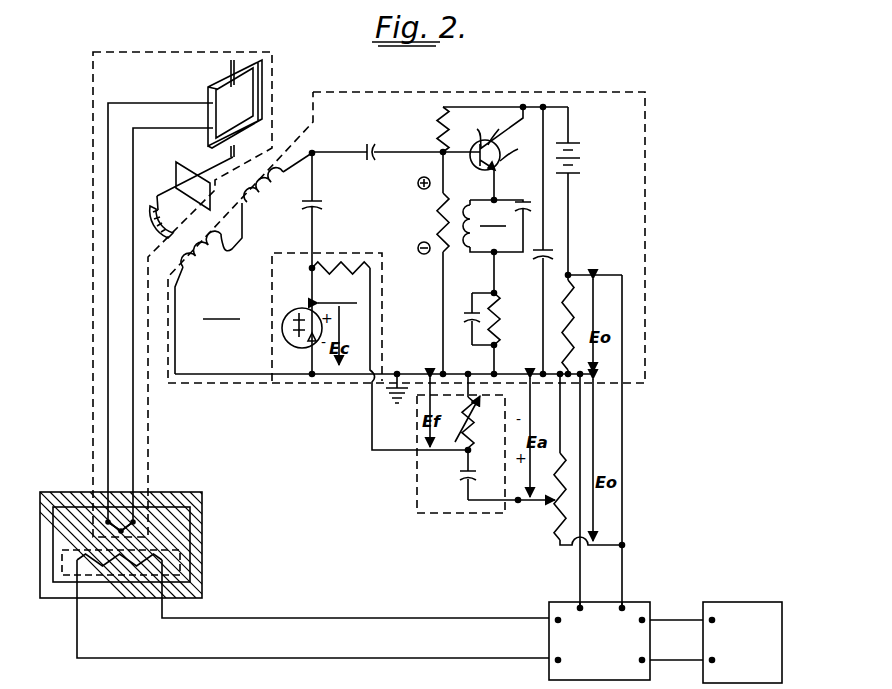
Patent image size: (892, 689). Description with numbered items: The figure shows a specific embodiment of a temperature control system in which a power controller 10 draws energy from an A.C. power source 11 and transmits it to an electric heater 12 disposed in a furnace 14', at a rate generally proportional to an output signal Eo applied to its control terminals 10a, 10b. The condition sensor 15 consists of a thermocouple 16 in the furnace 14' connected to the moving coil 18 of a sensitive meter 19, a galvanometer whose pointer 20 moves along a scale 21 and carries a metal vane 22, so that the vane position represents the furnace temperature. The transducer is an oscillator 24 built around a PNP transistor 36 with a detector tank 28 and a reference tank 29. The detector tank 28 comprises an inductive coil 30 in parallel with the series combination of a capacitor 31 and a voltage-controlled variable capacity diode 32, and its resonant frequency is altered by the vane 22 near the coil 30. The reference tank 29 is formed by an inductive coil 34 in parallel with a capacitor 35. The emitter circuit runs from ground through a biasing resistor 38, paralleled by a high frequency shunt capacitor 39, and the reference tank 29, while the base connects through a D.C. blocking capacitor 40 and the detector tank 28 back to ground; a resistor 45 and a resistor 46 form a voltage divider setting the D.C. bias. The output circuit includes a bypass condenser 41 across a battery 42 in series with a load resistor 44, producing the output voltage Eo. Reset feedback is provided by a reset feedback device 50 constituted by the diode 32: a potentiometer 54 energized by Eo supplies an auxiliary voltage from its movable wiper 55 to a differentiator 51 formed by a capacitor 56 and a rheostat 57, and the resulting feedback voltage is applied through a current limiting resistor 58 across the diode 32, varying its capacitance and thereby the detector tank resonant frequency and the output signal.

The condition sensor 15 is at (224, 24).
The moving coil 18 is at (214, 90).
The sensitive meter 19 is at (195, 95).
The pointer 20 is at (158, 207).
The scale 21 is at (162, 226).
The metal vane 22 is at (195, 162).
The oscillator 24 is at (432, 68).
The detector tank circuit 28 is at (208, 288).
The reference tank circuit 29 is at (496, 226).
The inductive coil 30 is at (242, 246).
The capacitor 31 is at (346, 194).
The voltage-controlled variable capacity diode 32 is at (311, 334).
The inductive coil 34 is at (470, 246).
The capacitor 35 is at (526, 198).
The PNP transistor 36 is at (478, 167).
The biasing resistor 38 is at (497, 320).
The capacitor 39 is at (462, 316).
The D.C. blocking capacitor 40 is at (372, 148).
The bypass condenser 41 is at (556, 251).
The battery 42 is at (582, 160).
The load resistor 44 is at (572, 274).
The resistor 45 is at (440, 217).
The resistor 46 is at (441, 130).
The reset feedback device 50 is at (368, 249).
The differentiator 51 is at (437, 513).
The potentiometer 54 is at (559, 523).
The movable wiper 55 is at (524, 501).
The capacitor 56 is at (464, 474).
The rheostat 57 is at (473, 425).
The current limiting resistor 58 is at (358, 272).
The power controller 10 is at (642, 610).
The control terminal 10a is at (556, 603).
The control terminal 10b is at (624, 606).
The A.C. power source 11 is at (746, 606).
The electric heater 12 is at (180, 566).
The furnace 14' is at (163, 545).
The thermocouple 16 is at (148, 527).